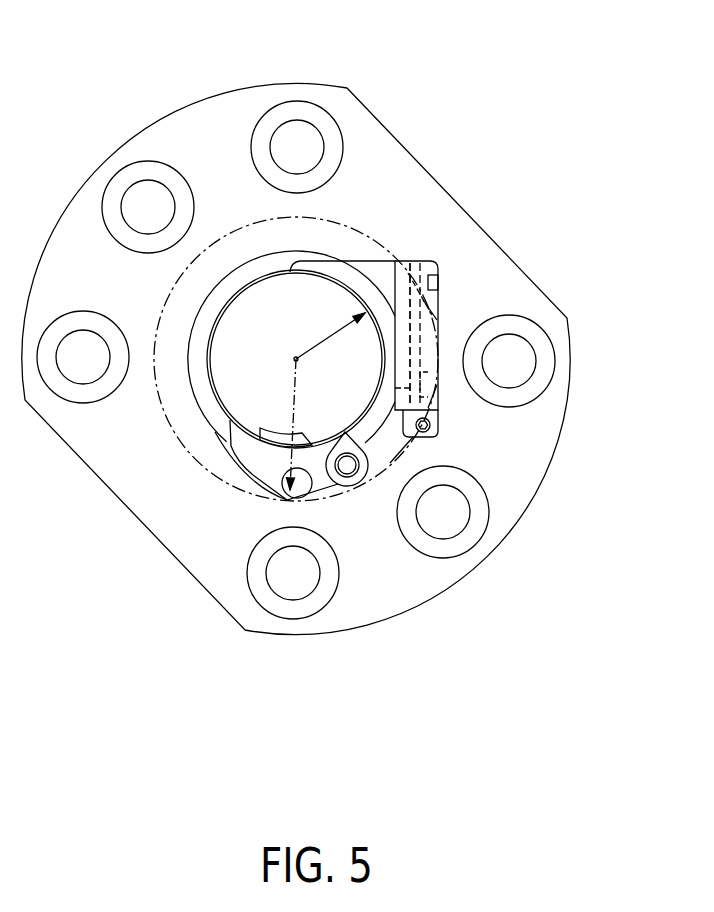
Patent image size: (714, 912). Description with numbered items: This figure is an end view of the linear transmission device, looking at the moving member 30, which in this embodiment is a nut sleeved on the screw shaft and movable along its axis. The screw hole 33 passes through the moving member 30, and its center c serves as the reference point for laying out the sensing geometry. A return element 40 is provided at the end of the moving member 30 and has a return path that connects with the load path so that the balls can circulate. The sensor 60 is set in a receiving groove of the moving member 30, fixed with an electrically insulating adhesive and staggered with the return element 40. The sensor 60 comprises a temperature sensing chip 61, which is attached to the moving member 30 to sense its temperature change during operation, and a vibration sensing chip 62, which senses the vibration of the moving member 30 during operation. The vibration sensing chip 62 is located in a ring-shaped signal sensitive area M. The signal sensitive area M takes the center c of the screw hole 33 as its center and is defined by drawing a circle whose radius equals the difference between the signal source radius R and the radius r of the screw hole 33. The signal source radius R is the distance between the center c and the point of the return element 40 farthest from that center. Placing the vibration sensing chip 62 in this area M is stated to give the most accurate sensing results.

The moving member 30 is at (390, 97).
The screw hole 33 is at (252, 305).
The return element 40 is at (267, 465).
The sensor 60 is at (430, 250).
The temperature sensing chip 61 is at (396, 357).
The vibration sensing chip 62 is at (437, 378).
The signal sensitive area M is at (407, 450).
The signal source radius R is at (284, 424).
The radius of the screw hole r is at (330, 336).
The center of the screw hole c is at (286, 359).